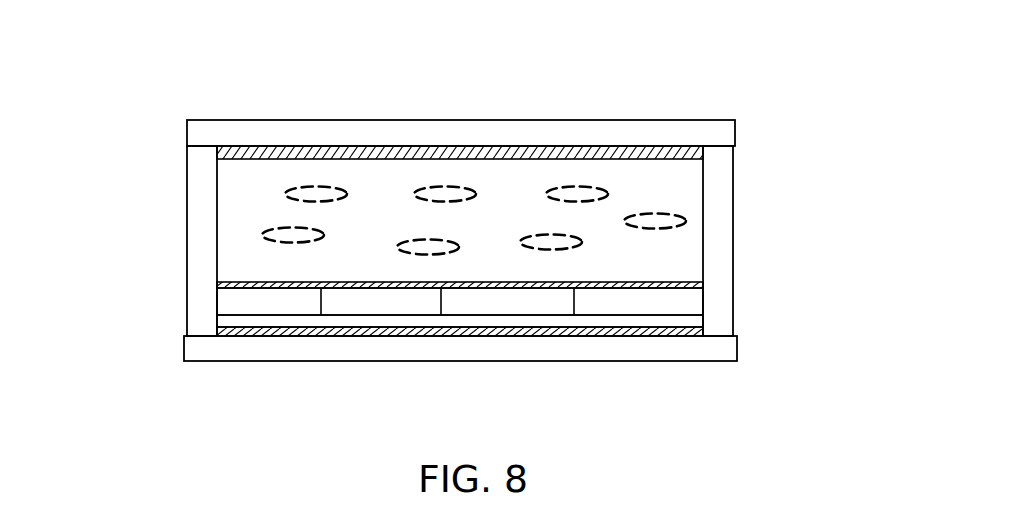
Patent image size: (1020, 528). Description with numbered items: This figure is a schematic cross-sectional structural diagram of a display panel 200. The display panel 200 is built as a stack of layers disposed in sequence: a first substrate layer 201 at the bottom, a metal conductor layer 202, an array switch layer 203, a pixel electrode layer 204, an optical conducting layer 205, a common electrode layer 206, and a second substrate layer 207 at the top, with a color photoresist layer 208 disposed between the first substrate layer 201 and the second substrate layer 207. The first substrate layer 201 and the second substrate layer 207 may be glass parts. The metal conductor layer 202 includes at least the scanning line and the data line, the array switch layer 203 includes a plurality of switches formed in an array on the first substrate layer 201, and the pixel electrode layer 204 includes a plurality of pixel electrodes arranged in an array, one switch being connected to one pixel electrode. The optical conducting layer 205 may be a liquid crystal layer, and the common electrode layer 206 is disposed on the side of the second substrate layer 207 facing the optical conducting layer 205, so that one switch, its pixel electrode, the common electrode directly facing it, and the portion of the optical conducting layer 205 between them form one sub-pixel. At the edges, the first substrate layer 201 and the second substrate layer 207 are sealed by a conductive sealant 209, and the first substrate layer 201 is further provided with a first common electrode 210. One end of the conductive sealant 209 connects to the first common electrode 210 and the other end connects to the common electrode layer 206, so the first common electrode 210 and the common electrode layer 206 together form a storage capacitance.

The display panel 200 is at (505, 74).
The first substrate layer 201 is at (240, 352).
The metal conductor layer 202 is at (333, 337).
The array switch layer 203 is at (242, 323).
The pixel electrode layer 204 is at (243, 283).
The optical conducting layer 205 is at (665, 207).
The common electrode layer 206 is at (323, 147).
The second substrate layer 207 is at (652, 133).
The color photoresist layer 208 is at (690, 308).
The conductive sealant 209 is at (730, 262).
The first common electrode 210 is at (460, 384).